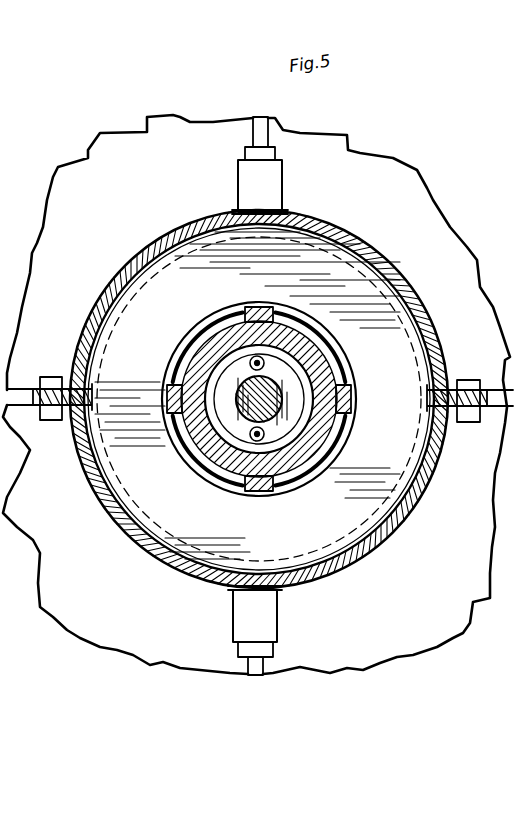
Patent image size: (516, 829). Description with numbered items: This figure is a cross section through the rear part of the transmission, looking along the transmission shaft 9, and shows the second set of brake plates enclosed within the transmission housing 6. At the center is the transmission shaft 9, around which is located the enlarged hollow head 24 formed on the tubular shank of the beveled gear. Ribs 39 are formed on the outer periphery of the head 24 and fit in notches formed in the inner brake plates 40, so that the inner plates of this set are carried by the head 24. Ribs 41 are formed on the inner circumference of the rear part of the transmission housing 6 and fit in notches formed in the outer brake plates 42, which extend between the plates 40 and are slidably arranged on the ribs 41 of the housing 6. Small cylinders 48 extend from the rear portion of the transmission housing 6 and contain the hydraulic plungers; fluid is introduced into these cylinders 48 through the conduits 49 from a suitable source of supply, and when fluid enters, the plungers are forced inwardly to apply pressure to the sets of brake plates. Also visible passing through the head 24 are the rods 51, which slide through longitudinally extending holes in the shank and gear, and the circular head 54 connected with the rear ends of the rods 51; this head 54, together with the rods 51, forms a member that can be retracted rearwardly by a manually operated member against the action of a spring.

The transmission housing 6 is at (414, 291).
The transmission shaft 9 is at (250, 406).
The enlarged hollow head 24 is at (285, 376).
The ribs 39 is at (243, 312).
The inner brake plates 40 is at (172, 358).
The ribs 41 is at (238, 210).
The outer brake plates 42 is at (168, 503).
The small cylinders 48 is at (272, 190).
The conduits 49 is at (252, 667).
The rods 51 is at (262, 357).
The circular head 54 is at (303, 370).